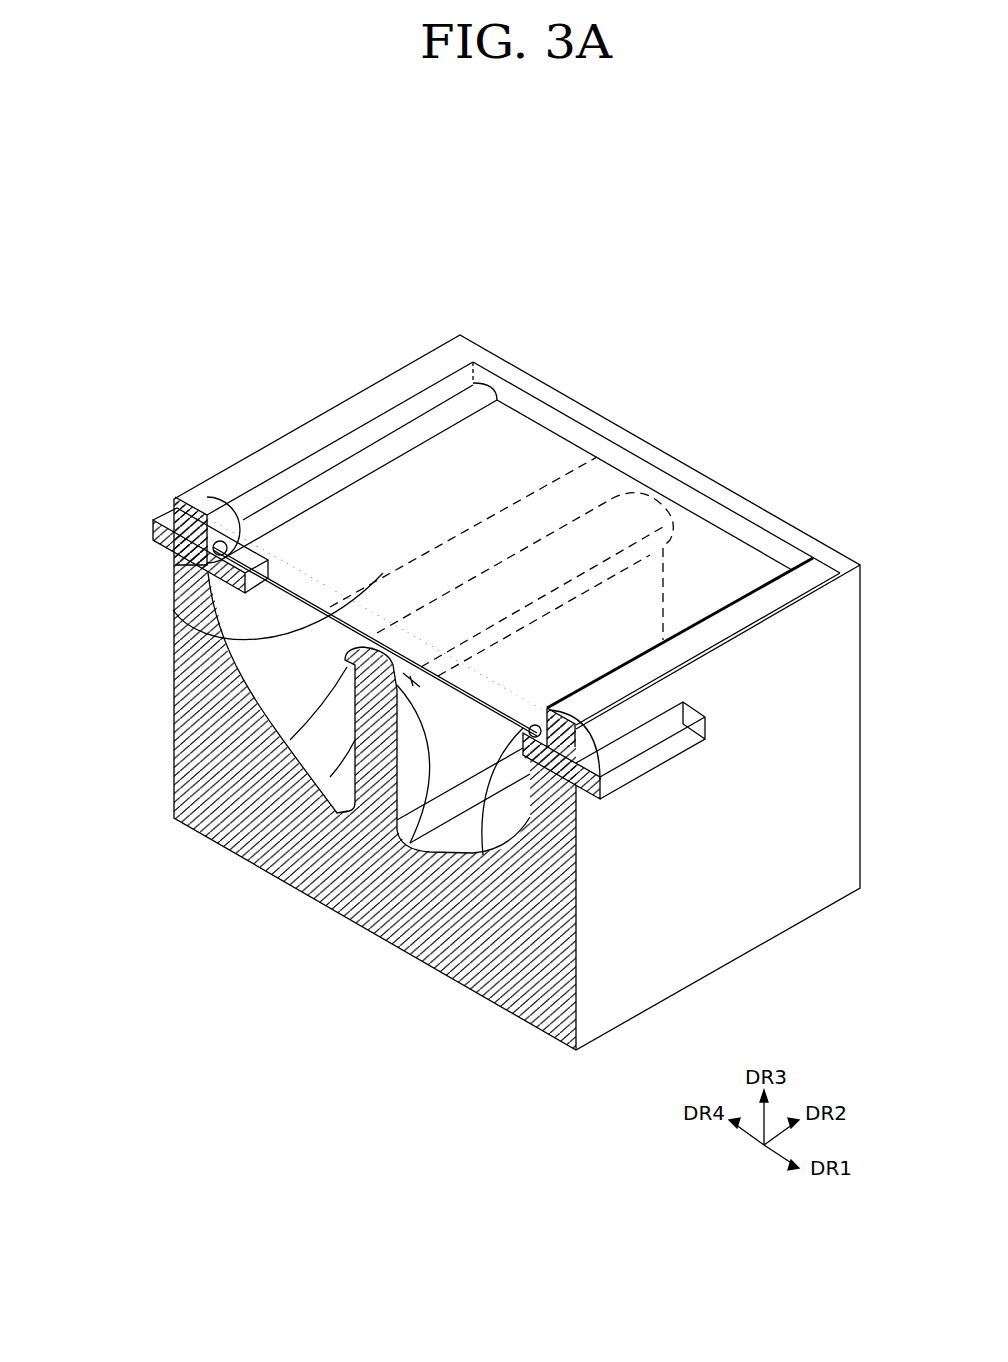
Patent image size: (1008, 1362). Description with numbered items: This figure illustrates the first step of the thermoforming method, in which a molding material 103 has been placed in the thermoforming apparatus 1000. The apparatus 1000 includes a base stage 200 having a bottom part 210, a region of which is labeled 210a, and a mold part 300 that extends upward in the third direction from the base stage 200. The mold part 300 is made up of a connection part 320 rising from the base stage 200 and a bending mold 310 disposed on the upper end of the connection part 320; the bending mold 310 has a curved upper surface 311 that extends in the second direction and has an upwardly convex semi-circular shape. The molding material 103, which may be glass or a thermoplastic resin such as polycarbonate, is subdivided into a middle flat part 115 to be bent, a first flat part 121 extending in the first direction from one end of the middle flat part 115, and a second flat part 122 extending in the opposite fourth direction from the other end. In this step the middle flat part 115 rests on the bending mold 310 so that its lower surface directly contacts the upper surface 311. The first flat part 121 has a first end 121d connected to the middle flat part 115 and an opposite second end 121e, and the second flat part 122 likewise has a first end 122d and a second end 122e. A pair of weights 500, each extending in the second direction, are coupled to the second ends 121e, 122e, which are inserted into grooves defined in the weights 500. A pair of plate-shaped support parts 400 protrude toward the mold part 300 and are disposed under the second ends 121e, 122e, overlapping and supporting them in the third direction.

The thermoforming apparatus 1000 is at (683, 262).
The molding material 103 is at (828, 442).
The middle flat part 115 is at (633, 478).
The first flat part 121 is at (753, 550).
The first end of the first flat part 121d is at (397, 690).
The second end of the first flat part 121e is at (482, 850).
The second flat part 122 is at (560, 437).
The first end of the second flat part 122d is at (173, 610).
The second end of the second flat part 122e is at (195, 487).
The base stage 200 is at (577, 1148).
The bottom part 210 is at (500, 978).
The side surface 210a is at (612, 1003).
The mold part 300 is at (258, 970).
The bending mold 310 is at (267, 840).
The upper surface 311 is at (407, 840).
The connection part 320 is at (313, 880).
The support part 400 is at (163, 530).
The weight 500 is at (360, 470).